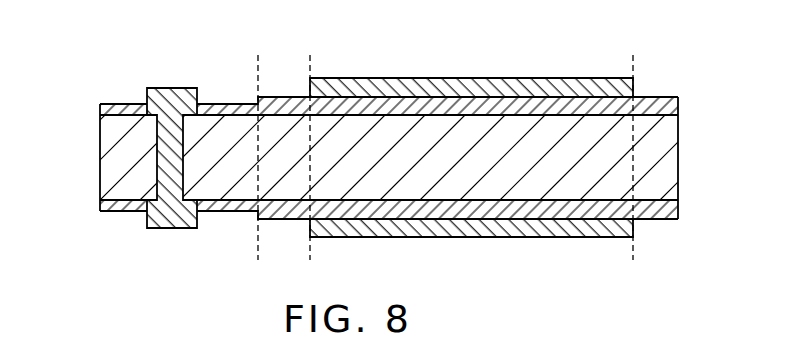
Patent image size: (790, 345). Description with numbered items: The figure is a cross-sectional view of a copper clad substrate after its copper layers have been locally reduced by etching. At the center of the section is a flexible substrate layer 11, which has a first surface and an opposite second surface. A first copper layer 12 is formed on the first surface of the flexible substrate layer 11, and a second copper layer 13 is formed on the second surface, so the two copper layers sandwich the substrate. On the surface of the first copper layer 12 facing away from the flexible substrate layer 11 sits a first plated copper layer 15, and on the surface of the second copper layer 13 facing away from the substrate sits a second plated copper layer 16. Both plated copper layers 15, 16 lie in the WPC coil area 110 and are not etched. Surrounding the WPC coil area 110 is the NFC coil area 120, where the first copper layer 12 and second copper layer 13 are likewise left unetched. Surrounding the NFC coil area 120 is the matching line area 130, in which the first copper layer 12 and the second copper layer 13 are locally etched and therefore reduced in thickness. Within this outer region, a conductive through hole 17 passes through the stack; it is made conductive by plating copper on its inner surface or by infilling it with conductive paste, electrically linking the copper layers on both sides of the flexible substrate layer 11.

The flexible substrate layer 11 is at (115, 162).
The first copper layer 12 is at (105, 109).
The second copper layer 13 is at (112, 205).
The first plated copper layer 15 is at (457, 92).
The second plated copper layer 16 is at (487, 228).
The conductive through hole 17 is at (172, 110).
The WPC coil area 110 is at (471, 147).
The NFC coil area 120 is at (280, 57).
The matching line area 130 is at (173, 125).